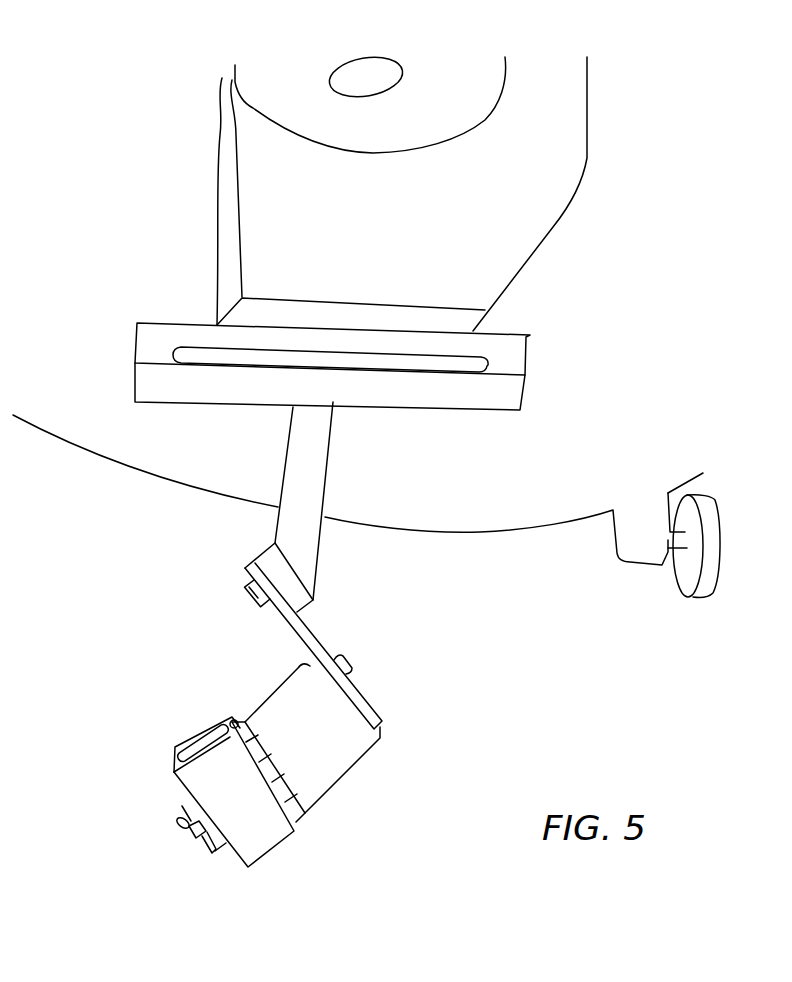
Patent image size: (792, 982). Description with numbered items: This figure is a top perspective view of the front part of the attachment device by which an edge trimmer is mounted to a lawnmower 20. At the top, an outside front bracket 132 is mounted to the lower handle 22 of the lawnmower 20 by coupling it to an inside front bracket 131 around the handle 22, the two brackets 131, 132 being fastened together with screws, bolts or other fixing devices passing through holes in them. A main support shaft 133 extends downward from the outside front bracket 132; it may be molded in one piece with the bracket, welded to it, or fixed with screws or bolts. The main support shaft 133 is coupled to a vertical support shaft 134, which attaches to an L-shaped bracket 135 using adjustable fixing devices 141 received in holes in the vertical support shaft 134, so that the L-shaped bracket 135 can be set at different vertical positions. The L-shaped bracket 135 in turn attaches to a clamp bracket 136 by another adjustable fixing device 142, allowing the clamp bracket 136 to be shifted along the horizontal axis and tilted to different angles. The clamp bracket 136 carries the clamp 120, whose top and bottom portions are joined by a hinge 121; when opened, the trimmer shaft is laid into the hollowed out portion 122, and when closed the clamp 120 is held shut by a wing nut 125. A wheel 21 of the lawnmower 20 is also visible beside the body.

The lawnmower 20 is at (107, 437).
The wheel 21 is at (714, 529).
The lower handle 22 is at (193, 356).
The clamp 120 is at (267, 840).
The hinge 121 is at (303, 812).
The hollowed out portion 122 is at (198, 733).
The wing nut 125 is at (190, 837).
The inside front bracket 131 is at (518, 359).
The outside front bracket 132 is at (514, 398).
The main support shaft 133 is at (319, 470).
The vertical support shaft 134 is at (273, 563).
The L-shaped bracket 135 is at (285, 627).
The clamp bracket 136 is at (330, 764).
The adjustable fixing device 141 is at (247, 593).
The adjustable fixing device 142 is at (351, 664).